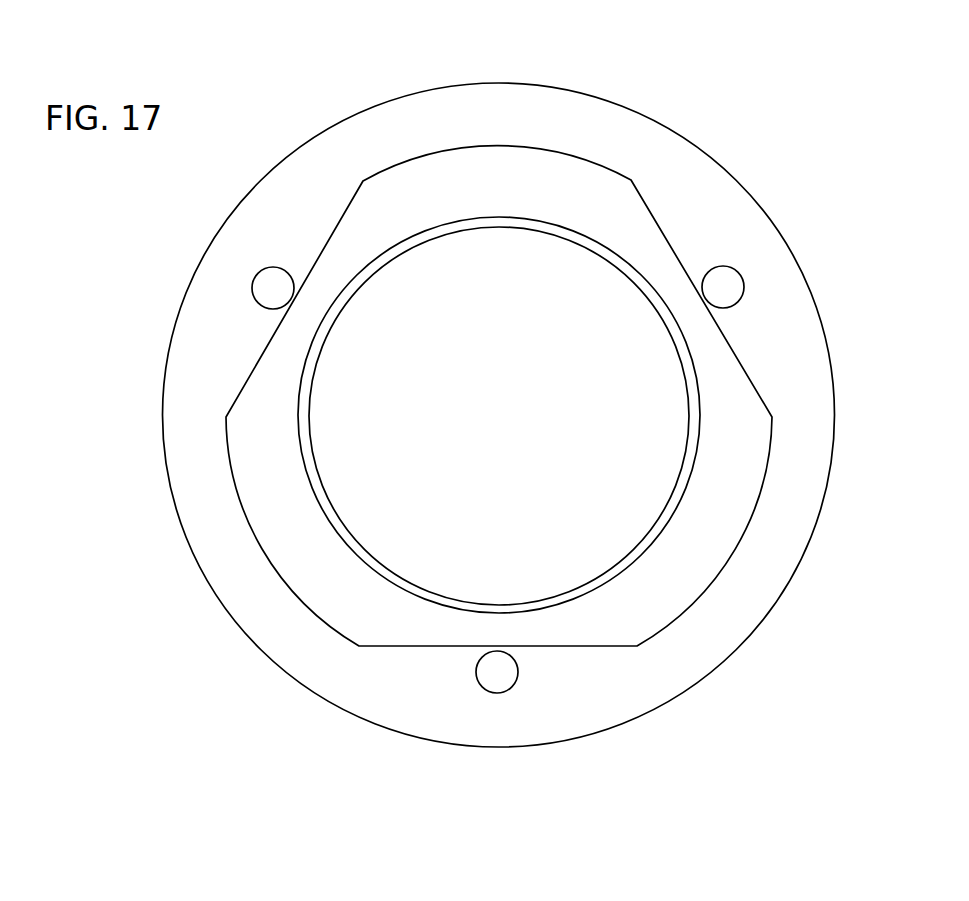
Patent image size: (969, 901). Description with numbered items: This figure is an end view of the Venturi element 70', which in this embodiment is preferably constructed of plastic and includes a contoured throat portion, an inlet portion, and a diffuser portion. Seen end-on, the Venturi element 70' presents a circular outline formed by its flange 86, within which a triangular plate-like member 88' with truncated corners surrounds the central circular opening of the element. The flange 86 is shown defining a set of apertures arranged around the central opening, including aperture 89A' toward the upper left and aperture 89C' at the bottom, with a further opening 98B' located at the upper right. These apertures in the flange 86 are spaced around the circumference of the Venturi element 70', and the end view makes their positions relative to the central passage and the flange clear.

The Venturi element 70' is at (521, 373).
The flange 86 is at (728, 170).
The triangular plate 88' is at (482, 323).
The aperture 89A' is at (285, 248).
The aperture 89C' is at (559, 679).
The hole 98B' is at (790, 264).